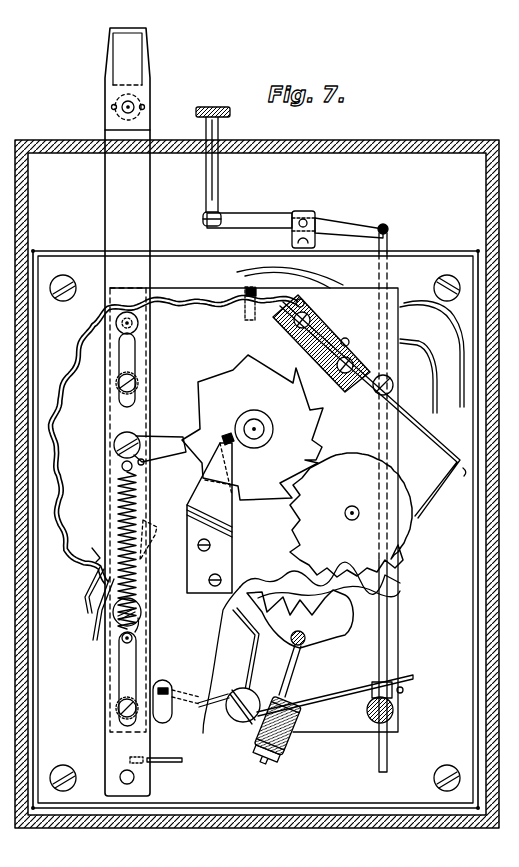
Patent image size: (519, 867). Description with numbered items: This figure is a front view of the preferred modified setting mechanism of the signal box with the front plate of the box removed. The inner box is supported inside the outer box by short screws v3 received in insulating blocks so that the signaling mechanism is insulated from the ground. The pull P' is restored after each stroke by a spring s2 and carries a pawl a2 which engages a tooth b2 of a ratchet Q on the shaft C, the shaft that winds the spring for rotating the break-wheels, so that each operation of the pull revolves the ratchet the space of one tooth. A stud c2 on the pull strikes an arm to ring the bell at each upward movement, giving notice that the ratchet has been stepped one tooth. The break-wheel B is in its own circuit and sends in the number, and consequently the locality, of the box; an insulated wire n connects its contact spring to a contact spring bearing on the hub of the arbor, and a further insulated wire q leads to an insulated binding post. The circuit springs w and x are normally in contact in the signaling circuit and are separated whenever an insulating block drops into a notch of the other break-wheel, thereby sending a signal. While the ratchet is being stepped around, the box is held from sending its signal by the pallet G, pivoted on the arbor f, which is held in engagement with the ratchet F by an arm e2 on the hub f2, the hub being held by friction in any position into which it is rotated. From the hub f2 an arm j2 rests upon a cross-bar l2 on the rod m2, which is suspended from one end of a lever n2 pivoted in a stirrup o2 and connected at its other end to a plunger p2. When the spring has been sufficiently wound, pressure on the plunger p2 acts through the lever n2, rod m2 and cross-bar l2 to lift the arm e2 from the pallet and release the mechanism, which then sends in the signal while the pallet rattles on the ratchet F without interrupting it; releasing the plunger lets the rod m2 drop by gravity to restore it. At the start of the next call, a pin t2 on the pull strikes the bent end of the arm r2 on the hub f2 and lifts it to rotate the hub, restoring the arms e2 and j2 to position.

The pull P' is at (139, 412).
The spring s2 is at (140, 584).
The pawl a2 is at (163, 438).
The stud c2 is at (134, 777).
The pin t2 is at (183, 760).
The screws v3 is at (63, 301).
The plunger p2 is at (220, 200).
The lever n2 is at (348, 235).
The stirrup o2 is at (302, 209).
The rod m2 is at (389, 622).
The cross-bar l2 is at (404, 690).
The circuit spring x is at (305, 280).
The circuit spring w is at (285, 282).
The tooth b2 is at (246, 358).
The ratchet Q is at (263, 397).
The arbor C is at (263, 425).
The insulated wire q is at (86, 602).
The insulated wire n is at (185, 303).
The break-wheel B is at (351, 515).
The ratchet F is at (301, 647).
The pallet G is at (351, 651).
The arbor f is at (312, 646).
The arm e2 is at (258, 662).
The hub f2 is at (247, 722).
The arm j2 is at (328, 690).
The arm r2 is at (165, 683).